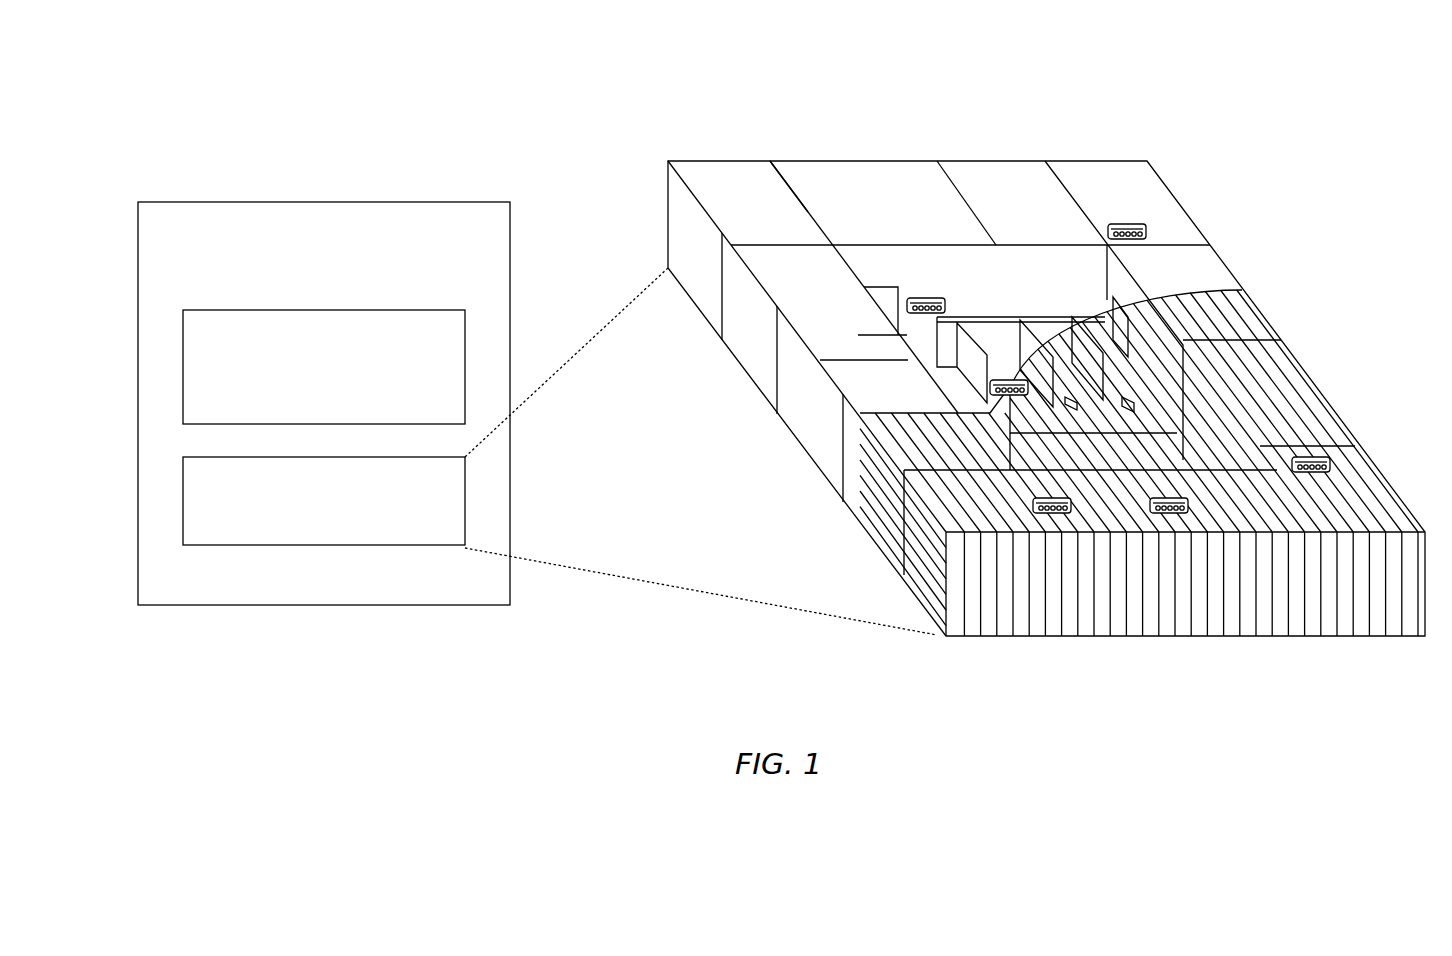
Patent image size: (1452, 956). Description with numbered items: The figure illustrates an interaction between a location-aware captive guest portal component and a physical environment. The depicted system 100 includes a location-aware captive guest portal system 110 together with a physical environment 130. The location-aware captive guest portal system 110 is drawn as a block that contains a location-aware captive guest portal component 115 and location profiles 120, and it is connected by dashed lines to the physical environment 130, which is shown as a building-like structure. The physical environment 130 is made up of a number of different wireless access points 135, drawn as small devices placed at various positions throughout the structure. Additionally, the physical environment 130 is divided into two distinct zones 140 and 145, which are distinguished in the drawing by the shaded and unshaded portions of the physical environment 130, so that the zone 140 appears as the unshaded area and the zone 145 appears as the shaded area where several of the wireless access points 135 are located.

The system 100 is at (701, 335).
The location-aware captive guest portal system 110 is at (324, 403).
The location-aware captive guest portal component 115 is at (324, 367).
The location profiles 120 is at (324, 501).
The physical environment 130 is at (1033, 134).
The wireless access points 135 is at (1007, 373).
The zone 140 is at (838, 188).
The zone 145 is at (1222, 490).